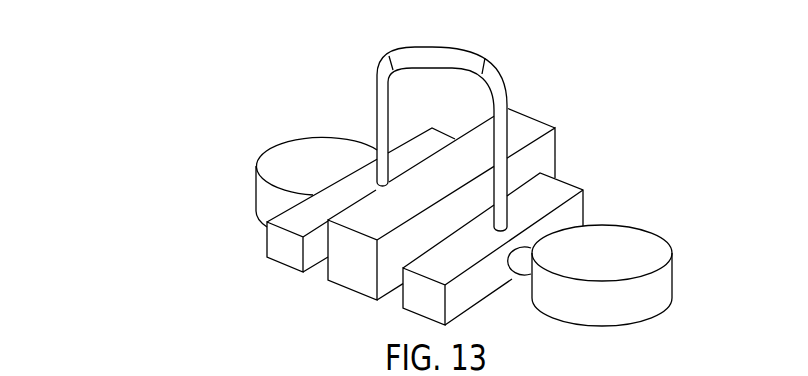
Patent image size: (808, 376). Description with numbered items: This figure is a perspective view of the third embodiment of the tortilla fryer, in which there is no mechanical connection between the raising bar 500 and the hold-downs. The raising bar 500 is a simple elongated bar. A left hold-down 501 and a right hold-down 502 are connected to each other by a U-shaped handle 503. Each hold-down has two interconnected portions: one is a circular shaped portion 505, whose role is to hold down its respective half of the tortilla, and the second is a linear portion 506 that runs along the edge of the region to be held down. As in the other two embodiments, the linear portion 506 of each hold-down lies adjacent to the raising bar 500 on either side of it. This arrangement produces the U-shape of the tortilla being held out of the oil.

The raising bar 500 is at (521, 112).
The left hold-down 501 is at (347, 113).
The right hold-down 502 is at (602, 198).
The U-shaped handle 503 is at (502, 84).
The circular shaped portion 505 is at (318, 136).
The linear portion 506 is at (523, 186).